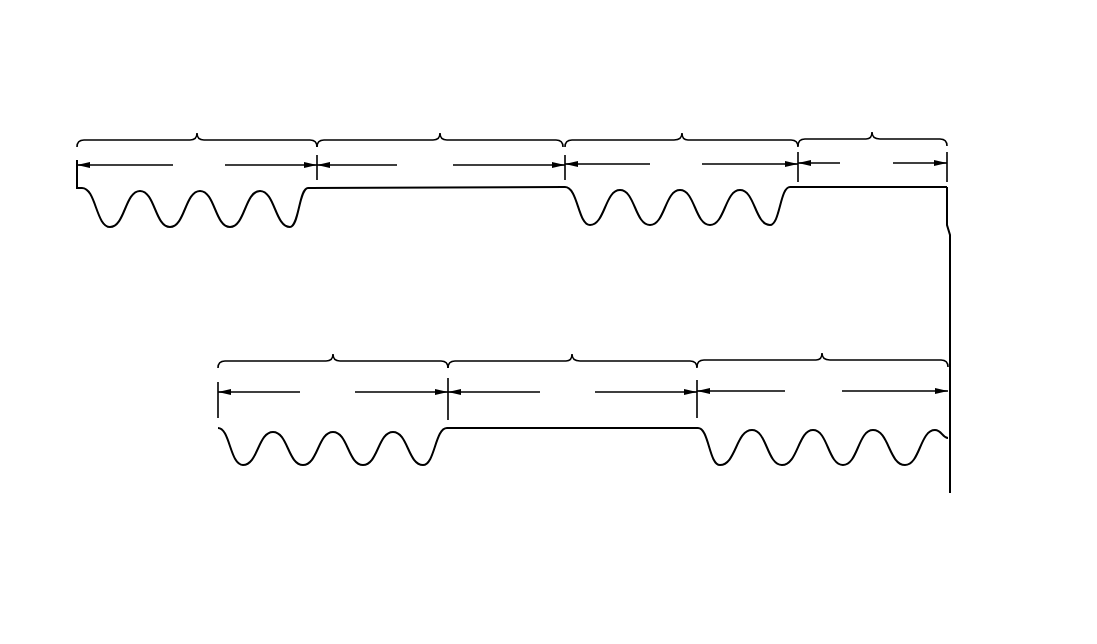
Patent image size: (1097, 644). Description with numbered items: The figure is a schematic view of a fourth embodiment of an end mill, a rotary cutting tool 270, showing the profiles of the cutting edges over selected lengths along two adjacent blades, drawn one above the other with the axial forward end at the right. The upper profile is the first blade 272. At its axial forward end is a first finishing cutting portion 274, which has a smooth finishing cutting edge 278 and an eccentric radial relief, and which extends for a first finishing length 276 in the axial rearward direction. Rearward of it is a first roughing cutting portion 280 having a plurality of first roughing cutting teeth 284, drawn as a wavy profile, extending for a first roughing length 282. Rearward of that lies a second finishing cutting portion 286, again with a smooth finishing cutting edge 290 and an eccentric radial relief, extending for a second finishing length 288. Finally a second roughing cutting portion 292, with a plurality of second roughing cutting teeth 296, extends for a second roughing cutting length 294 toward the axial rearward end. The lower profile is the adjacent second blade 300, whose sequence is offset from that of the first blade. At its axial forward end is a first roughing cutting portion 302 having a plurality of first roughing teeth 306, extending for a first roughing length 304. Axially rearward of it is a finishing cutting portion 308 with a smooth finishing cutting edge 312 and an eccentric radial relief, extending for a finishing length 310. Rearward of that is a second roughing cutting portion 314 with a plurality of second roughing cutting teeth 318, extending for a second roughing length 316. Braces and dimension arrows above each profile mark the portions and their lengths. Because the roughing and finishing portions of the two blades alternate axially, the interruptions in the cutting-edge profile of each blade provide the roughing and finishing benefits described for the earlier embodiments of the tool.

The rotary cutting tool 270 is at (970, 87).
The first blade 272 is at (952, 188).
The first finishing cutting portion 274 is at (872, 122).
The first finishing length 276 is at (872, 166).
The finishing cutting edge 278 is at (912, 190).
The first roughing cutting portion 280 is at (681, 121).
The first roughing length 282 is at (681, 166).
The first roughing cutting teeth 284 is at (747, 192).
The second finishing cutting portion 286 is at (440, 121).
The second finishing length 288 is at (441, 167).
The finishing cutting edge 290 is at (488, 189).
The second roughing cutting portion 292 is at (197, 124).
The second roughing cutting length 294 is at (197, 168).
The second roughing cutting teeth 296 is at (260, 193).
The second blade 300 is at (950, 438).
The first roughing cutting portion 302 is at (822, 346).
The first roughing length 304 is at (822, 394).
The first roughing teeth 306 is at (867, 433).
The finishing cutting portion 308 is at (572, 346).
The finishing length 310 is at (572, 399).
The finishing cutting edge 312 is at (592, 428).
The second roughing cutting portion 314 is at (333, 347).
The second roughing length 316 is at (333, 399).
The second roughing cutting teeth 318 is at (400, 433).